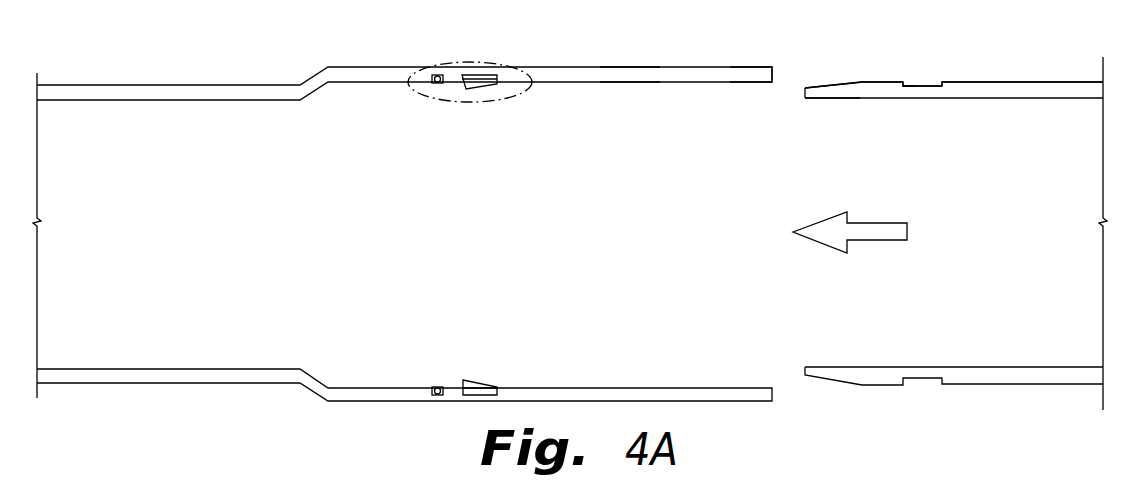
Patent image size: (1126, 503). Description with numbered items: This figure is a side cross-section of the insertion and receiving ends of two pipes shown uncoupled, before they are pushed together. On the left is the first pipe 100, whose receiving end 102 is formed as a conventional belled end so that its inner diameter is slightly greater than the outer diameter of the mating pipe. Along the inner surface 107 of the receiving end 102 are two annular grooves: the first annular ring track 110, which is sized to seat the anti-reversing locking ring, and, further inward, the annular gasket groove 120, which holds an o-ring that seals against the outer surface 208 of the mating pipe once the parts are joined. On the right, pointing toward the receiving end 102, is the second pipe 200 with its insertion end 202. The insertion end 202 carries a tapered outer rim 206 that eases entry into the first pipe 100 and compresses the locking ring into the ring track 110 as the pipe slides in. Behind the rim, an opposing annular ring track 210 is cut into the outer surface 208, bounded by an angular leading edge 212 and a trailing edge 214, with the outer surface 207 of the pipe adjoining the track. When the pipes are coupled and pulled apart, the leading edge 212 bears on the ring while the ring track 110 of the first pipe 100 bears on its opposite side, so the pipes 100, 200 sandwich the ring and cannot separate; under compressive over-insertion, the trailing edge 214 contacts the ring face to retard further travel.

The first pipe 100 is at (145, 100).
The receiving end 102 is at (627, 85).
The inner surface 107 is at (755, 86).
The first annular ring track 110 is at (477, 74).
The annular gasket groove 120 is at (437, 386).
The second pipe 200 is at (1022, 99).
The insertion end 202 is at (823, 99).
The tapered outer rim 206 is at (823, 87).
The outer surface 207 is at (872, 82).
The outer surface 208 is at (1043, 82).
The opposing annular ring track 210 is at (920, 85).
The leading edge 212 is at (910, 85).
The trailing edge 214 is at (976, 83).